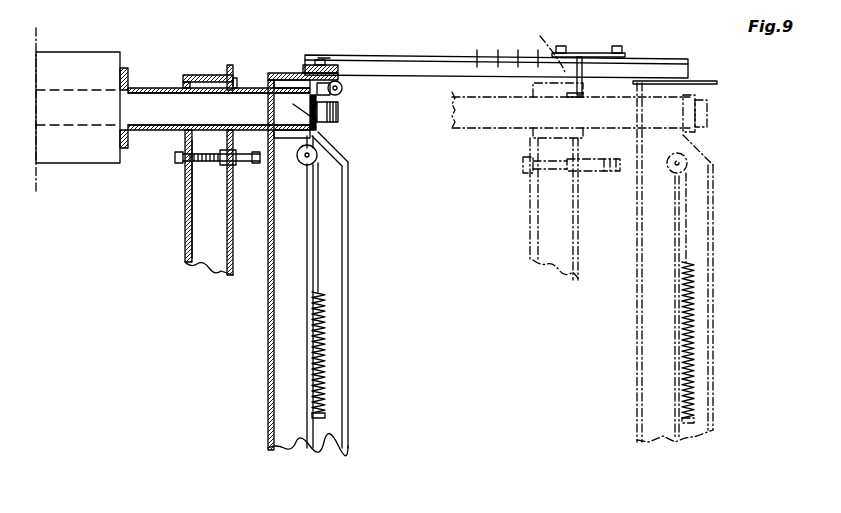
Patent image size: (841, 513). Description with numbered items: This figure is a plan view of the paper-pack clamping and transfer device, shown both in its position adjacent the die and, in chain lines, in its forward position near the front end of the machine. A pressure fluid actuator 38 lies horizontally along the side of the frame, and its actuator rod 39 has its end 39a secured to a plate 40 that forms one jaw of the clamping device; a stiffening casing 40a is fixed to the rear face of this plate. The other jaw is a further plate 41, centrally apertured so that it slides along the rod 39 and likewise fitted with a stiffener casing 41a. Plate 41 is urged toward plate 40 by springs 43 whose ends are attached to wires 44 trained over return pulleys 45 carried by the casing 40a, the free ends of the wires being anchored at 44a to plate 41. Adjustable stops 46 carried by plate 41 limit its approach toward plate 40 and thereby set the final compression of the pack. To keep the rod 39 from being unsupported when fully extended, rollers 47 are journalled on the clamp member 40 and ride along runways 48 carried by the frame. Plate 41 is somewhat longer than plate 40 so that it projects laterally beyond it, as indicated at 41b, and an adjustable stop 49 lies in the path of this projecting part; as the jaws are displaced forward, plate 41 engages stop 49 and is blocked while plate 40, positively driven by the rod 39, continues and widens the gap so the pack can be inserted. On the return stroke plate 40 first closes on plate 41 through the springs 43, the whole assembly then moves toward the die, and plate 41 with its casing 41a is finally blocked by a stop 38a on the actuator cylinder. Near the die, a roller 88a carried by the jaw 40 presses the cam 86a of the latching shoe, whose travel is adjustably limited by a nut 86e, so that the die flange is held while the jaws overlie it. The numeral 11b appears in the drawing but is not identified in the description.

The pressure fluid actuator 38 is at (75, 62).
The stop 38a is at (155, 85).
The actuator rod 39 is at (142, 105).
The rod end 39a is at (293, 105).
The plate 40 is at (265, 272).
The stiffening casing 40a is at (306, 283).
The plate 41 is at (228, 230).
The stiffener casing 41a is at (186, 77).
The projecting part 41b is at (228, 66).
The post 11b is at (240, 70).
The spring 43 is at (325, 345).
The wire 44 is at (318, 242).
The anchor point 44a is at (232, 150).
The return pulley 45 is at (312, 160).
The adjustable stop 46 is at (242, 165).
The roller 47 is at (328, 66).
The runway 48 is at (456, 66).
The stop 49 is at (580, 58).
The cam 86a is at (343, 84).
The roller 88a is at (338, 102).
The nut 86e is at (345, 29).